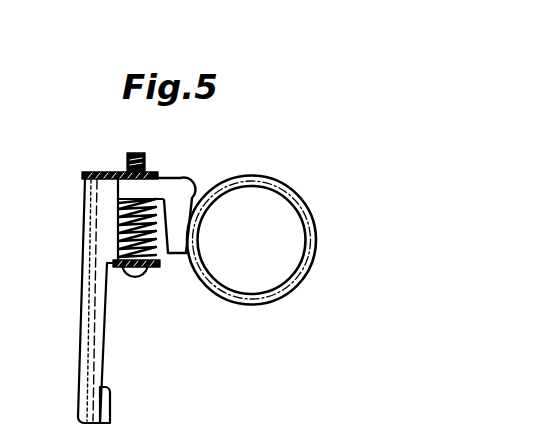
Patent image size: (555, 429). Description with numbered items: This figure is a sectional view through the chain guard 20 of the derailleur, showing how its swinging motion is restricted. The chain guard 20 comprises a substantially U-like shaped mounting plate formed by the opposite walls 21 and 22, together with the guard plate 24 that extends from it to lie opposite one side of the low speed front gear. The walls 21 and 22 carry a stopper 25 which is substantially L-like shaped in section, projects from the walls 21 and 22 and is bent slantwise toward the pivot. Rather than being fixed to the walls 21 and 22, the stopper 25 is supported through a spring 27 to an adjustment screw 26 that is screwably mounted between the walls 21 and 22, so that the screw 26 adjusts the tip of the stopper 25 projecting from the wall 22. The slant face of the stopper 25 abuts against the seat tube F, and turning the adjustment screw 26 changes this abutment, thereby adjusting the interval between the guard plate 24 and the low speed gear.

The chain guard 20 is at (86, 195).
The wall 21 is at (131, 284).
The wall 22 is at (107, 172).
The guard plate 24 is at (78, 393).
The stopper 25 is at (173, 192).
The adjustment screw 26 is at (142, 283).
The spring 27 is at (122, 229).
The seat tube F is at (242, 297).